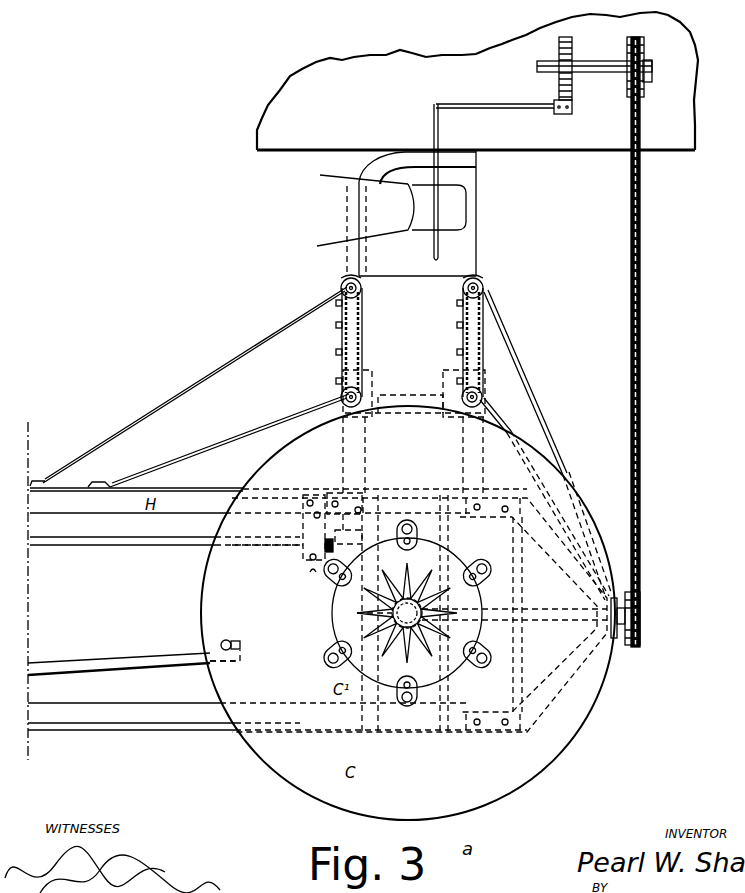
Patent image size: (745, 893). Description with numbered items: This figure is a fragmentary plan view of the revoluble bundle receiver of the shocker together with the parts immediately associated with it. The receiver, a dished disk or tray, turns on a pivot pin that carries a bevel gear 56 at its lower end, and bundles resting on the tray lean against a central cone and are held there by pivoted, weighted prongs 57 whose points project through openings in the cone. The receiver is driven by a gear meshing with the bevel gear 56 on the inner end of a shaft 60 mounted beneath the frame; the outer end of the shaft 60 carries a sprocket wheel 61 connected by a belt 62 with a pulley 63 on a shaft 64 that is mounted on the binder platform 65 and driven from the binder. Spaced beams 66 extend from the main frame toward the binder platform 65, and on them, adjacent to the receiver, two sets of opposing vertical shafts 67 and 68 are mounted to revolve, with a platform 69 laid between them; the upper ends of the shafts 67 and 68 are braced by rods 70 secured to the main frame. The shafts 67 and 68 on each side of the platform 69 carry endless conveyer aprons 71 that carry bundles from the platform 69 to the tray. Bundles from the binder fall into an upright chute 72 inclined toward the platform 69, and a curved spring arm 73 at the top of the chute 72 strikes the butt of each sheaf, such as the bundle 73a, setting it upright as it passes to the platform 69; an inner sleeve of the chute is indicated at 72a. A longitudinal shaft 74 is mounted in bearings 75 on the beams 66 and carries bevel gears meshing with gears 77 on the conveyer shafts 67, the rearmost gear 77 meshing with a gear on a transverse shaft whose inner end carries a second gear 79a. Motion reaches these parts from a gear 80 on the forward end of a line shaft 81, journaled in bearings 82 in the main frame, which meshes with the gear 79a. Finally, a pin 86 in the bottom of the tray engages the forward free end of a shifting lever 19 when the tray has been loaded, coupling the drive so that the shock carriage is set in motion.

The shifting lever 19 is at (130, 663).
The bevel gear 56 is at (417, 571).
The weighted prongs 57 is at (452, 612).
The shaft 60 is at (548, 612).
The sprocket wheel 61 is at (641, 618).
The belt 62 is at (641, 389).
The pulley 63 is at (646, 47).
The shaft 64 is at (603, 61).
The binder platform 65 is at (508, 119).
The beams 66 is at (342, 470).
The vertical shafts 67 is at (340, 397).
The vertical shafts 68 is at (340, 289).
The platform 69 is at (417, 248).
The rods 70 is at (232, 372).
The endless conveyer aprons 71 is at (341, 340).
The upright chute 72 is at (346, 199).
The sleeve 72a is at (391, 226).
The spring arm 73 is at (438, 150).
The bundle 73a is at (466, 205).
The longitudinal shaft 74 is at (410, 394).
The bearings 75 is at (375, 413).
The gears 77 is at (337, 391).
The second gear 79a is at (363, 528).
The gear 80 is at (322, 543).
The line shaft 81 is at (250, 547).
The bearings 82 is at (313, 561).
The pin 86 is at (240, 646).